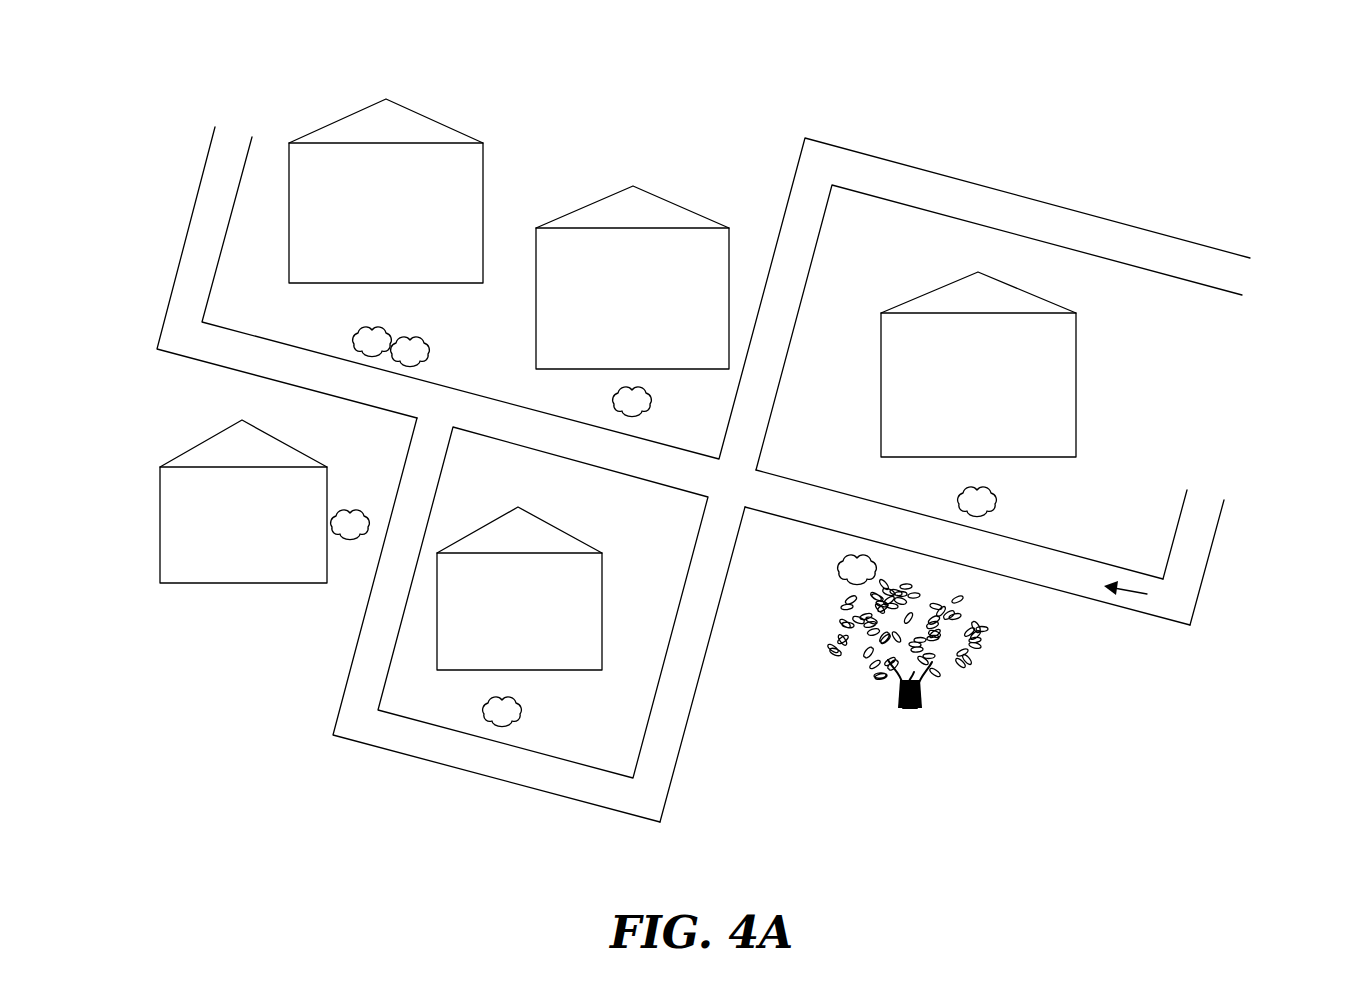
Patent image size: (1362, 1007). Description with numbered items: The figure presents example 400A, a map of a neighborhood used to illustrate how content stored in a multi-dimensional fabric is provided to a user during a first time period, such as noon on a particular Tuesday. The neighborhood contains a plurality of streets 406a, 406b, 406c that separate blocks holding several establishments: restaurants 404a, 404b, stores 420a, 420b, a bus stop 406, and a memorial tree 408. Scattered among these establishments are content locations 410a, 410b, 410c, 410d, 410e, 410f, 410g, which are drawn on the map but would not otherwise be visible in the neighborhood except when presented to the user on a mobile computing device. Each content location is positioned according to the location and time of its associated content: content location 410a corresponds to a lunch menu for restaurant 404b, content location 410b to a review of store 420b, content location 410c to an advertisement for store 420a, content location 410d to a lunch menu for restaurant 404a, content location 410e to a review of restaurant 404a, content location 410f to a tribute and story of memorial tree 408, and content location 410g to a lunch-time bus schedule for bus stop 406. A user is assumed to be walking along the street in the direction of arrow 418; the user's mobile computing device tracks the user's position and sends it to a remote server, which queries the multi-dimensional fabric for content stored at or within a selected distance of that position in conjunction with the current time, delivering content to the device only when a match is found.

The example 400A is at (1252, 66).
The restaurant 404a is at (315, 130).
The restaurant 404b is at (195, 583).
The bus stop 406 is at (1076, 386).
The street 406a is at (787, 500).
The street 406b is at (463, 743).
The street 406c is at (668, 740).
The memorial tree 408 is at (990, 666).
The content location 410a is at (350, 511).
The content location 410b is at (520, 705).
The content location 410c is at (650, 399).
The content location 410d is at (428, 350).
The content location 410e is at (354, 340).
The content location 410f is at (843, 578).
The content location 410g is at (995, 498).
The arrow 418 is at (1137, 595).
The store 420a is at (580, 208).
The store 420b is at (593, 548).